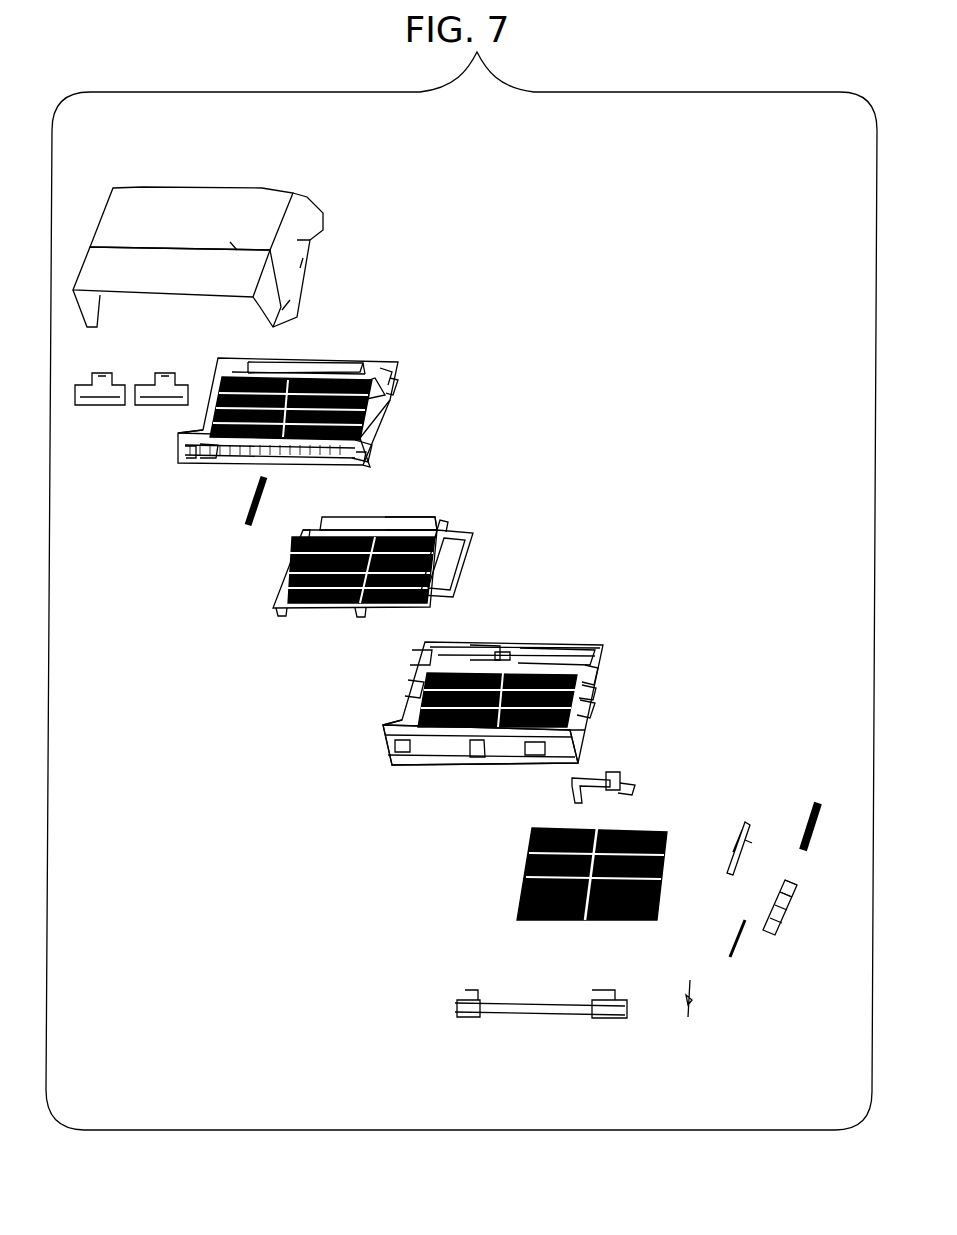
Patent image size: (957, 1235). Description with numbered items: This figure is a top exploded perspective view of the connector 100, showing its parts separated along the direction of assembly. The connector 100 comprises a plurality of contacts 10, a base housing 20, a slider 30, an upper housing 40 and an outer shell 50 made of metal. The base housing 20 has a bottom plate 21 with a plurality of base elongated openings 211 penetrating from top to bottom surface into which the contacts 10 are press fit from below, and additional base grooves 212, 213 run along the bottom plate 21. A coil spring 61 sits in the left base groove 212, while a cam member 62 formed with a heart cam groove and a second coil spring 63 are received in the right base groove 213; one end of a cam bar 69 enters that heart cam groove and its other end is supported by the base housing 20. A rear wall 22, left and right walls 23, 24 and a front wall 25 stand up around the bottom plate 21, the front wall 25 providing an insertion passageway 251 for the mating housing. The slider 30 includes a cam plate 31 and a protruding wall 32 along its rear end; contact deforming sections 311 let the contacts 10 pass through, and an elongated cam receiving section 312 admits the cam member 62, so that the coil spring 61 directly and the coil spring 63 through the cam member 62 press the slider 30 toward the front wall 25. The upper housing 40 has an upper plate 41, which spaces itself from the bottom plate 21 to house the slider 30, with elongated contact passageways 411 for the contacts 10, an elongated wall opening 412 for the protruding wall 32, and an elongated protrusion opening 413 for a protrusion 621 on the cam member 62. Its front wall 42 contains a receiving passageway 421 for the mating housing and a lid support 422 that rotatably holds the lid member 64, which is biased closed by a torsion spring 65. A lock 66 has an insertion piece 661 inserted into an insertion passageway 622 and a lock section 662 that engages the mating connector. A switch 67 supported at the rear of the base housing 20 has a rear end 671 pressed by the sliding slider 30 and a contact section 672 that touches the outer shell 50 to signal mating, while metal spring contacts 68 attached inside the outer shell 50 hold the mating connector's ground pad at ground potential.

The connector 100 is at (562, 300).
The contacts 10 is at (646, 814).
The base housing 20 is at (585, 613).
The bottom plate 21 is at (565, 655).
The base elongated openings 211 is at (593, 677).
The base groove 212 is at (420, 688).
The base groove 213 is at (592, 692).
The rear wall 22 is at (478, 642).
The left wall 23 is at (422, 655).
The right wall 24 is at (595, 707).
The front wall 25 is at (415, 760).
The insertion passageway 251 is at (437, 750).
The slider 30 is at (449, 492).
The cam plate 31 is at (303, 533).
The protruding wall 32 is at (393, 530).
The contact deforming sections 311 is at (448, 525).
The elongated cam receiving section 312 is at (462, 540).
The upper housing 40 is at (371, 327).
The upper plate 41 is at (360, 382).
The elongated contact passageways 411 is at (387, 375).
The elongated wall opening 412 is at (290, 362).
The elongated protrusion opening 413 is at (393, 382).
The front wall 42 is at (373, 446).
The receiving passageway 421 is at (217, 450).
The lid support 422 is at (365, 458).
The outer shell 50 is at (291, 167).
The coil spring 61 is at (250, 507).
The cam member 62 is at (795, 915).
The protrusion 621 is at (788, 880).
The insertion passageway 622 is at (793, 898).
The coil spring 63 is at (818, 806).
The lid member 64 is at (615, 1017).
The torsion spring 65 is at (692, 990).
The lock 66 is at (737, 835).
The insertion piece 661 is at (752, 840).
The lock section 662 is at (730, 872).
The switch 67 is at (583, 777).
The rear end 671 is at (630, 783).
The contact section 672 is at (608, 778).
The spring contacts 68 is at (110, 400).
The cam bar 69 is at (738, 948).